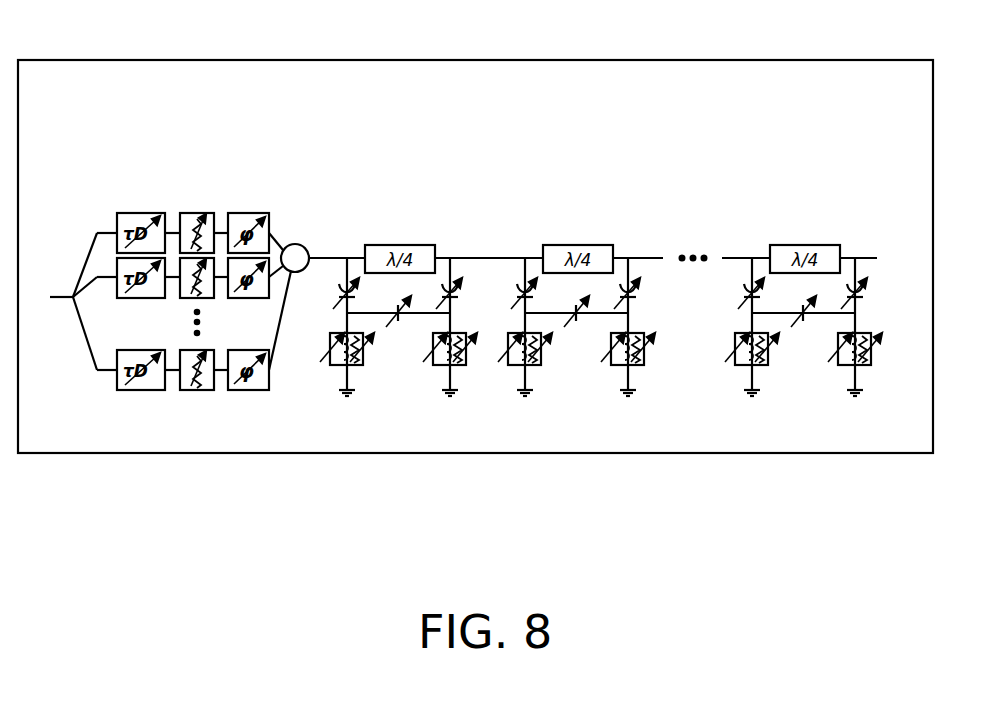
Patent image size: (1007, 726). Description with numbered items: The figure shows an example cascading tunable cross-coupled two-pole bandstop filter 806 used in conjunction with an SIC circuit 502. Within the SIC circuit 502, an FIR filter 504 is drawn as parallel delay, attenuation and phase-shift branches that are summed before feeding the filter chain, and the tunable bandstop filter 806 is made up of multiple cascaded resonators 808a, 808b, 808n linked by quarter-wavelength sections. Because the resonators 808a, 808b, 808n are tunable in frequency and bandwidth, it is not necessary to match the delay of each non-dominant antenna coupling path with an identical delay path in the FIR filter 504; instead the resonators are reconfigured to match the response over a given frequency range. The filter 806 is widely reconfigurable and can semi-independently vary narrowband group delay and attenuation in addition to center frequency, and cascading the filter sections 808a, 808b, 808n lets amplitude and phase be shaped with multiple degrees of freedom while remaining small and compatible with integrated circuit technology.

The SIC circuit 502 is at (762, 60).
The FIR filter 504 is at (85, 203).
The tunable cross-coupled two-pole bandstop filter 806 is at (614, 243).
The cascaded resonator 808a is at (426, 211).
The cascaded resonator 808b is at (609, 211).
The cascaded resonator 808n is at (822, 284).